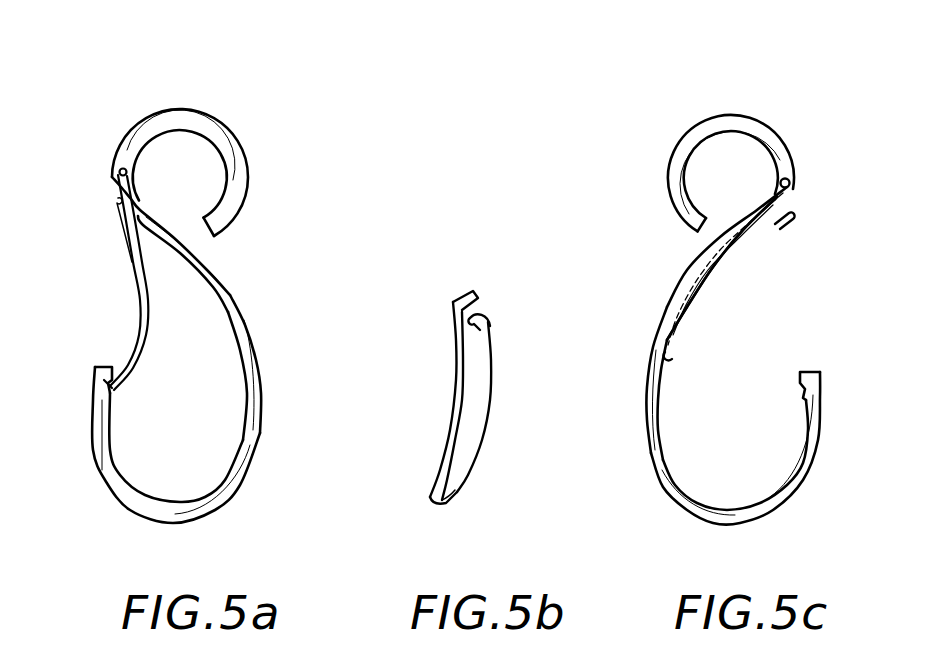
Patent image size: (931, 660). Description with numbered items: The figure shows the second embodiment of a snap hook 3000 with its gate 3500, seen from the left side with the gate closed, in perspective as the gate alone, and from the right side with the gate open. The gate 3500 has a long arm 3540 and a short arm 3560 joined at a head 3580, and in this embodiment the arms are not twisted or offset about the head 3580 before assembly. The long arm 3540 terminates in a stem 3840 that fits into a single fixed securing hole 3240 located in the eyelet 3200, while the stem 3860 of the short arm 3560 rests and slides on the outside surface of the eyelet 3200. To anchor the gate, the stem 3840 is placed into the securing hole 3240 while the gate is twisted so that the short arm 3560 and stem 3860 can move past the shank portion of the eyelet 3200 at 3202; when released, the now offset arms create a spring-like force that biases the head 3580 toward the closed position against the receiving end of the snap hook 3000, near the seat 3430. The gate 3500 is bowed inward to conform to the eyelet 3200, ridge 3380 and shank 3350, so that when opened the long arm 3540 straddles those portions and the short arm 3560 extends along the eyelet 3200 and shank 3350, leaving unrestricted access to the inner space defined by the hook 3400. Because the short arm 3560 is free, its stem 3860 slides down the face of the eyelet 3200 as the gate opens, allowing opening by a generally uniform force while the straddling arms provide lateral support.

In FIG. 5A, the snap hook 3000 is at (203, 289).
In FIG. 5C, the snap hook 3000 is at (711, 305).
In FIG. 5A, the eyelet 3200 is at (242, 147).
In FIG. 5C, the eyelet 3200 is at (702, 120).
In FIG. 5A, the shank portion of eyelet 3202 is at (115, 177).
In FIG. 5A, the securing hole 3240 is at (122, 168).
In FIG. 5A, the ridge 3380 is at (237, 275).
In FIG. 5C, the ridge 3380 is at (678, 283).
In FIG. 5A, the shank 3350 is at (250, 335).
In FIG. 5C, the shank 3350 is at (658, 338).
In FIG. 5A, the hook 3400 is at (222, 495).
In FIG. 5C, the hook 3400 is at (770, 507).
In FIG. 5A, the tip latch seat 3430 is at (115, 387).
In FIG. 5A, the gate 3500 is at (125, 235).
In FIG. 5B, the gate 3500 is at (462, 376).
In FIG. 5B, the long arm 3540 is at (455, 378).
In FIG. 5C, the long arm 3540 is at (703, 260).
In FIG. 5B, the short arm 3560 is at (492, 377).
In FIG. 5C, the short arm 3560 is at (737, 253).
In FIG. 5B, the head 3580 is at (447, 503).
In FIG. 5B, the stem 3840 is at (465, 292).
In FIG. 5B, the stem 3860 is at (483, 310).